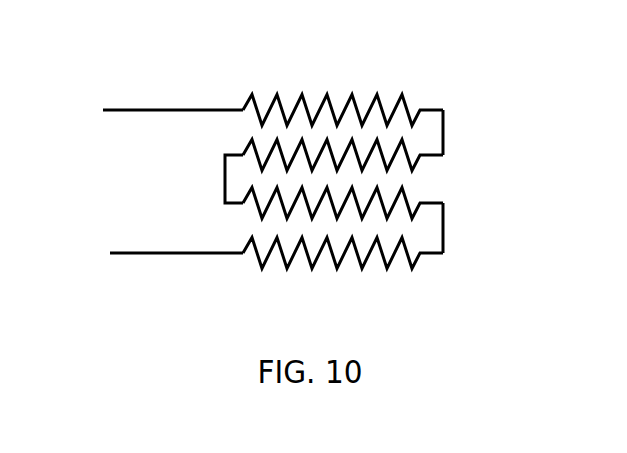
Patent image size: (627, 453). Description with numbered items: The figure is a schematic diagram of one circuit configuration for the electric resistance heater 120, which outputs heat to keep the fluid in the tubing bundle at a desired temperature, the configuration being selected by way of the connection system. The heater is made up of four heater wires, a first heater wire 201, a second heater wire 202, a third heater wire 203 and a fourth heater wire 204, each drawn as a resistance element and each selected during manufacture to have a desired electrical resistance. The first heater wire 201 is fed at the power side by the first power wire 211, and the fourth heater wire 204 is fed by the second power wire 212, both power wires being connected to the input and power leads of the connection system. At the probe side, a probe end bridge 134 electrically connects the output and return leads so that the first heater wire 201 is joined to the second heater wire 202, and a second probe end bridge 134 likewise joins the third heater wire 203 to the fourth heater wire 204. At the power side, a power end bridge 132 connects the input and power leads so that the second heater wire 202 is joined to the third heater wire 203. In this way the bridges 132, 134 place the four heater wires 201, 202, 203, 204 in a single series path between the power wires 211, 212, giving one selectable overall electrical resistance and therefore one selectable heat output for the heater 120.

The electric resistance heater 120 is at (158, 72).
The first power wire 211 is at (104, 110).
The second power wire 212 is at (155, 255).
The first heater wire 201 is at (322, 102).
The second heater wire 202 is at (367, 155).
The third heater wire 203 is at (367, 203).
The fourth heater wire 204 is at (383, 263).
The power end bridge 132 is at (225, 182).
The probe end bridge 134 is at (433, 133).